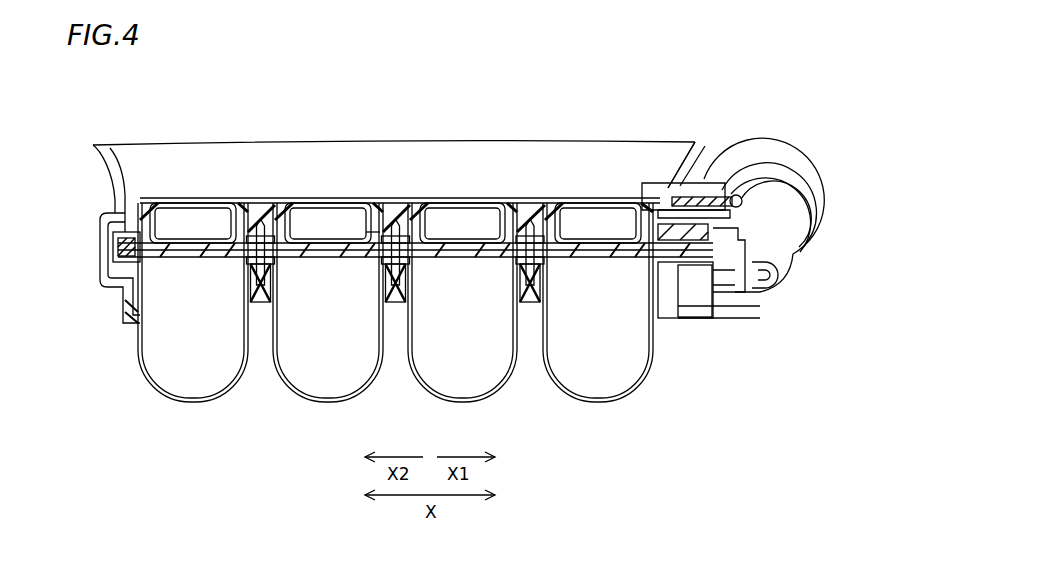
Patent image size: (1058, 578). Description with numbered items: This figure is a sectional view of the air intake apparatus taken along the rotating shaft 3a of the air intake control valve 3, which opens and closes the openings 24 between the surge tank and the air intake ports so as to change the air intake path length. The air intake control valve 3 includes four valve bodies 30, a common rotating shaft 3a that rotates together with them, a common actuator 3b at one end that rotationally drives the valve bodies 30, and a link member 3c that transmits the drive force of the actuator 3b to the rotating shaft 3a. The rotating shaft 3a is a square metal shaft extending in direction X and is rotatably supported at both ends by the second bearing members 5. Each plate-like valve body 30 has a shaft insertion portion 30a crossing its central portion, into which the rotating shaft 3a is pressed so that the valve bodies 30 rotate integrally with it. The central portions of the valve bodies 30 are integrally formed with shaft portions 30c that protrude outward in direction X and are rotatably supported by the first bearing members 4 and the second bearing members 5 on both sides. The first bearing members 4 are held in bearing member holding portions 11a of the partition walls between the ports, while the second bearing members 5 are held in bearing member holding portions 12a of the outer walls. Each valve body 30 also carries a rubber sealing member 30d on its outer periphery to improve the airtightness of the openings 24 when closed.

The air intake control valve 3 is at (808, 145).
The rotating shaft 3a is at (372, 232).
The actuator 3b is at (718, 142).
The link member 3c is at (730, 295).
The first bearing member 4 is at (260, 302).
The second bearing member 5 is at (118, 238).
The bearing member holding portion 11a is at (260, 213).
The bearing member holding portion 12a is at (105, 263).
The opening 24 is at (225, 205).
The valve body 30 is at (197, 222).
The shaft insertion portion 30a is at (196, 258).
The shaft portion 30c is at (146, 262).
The sealing member 30d is at (162, 207).